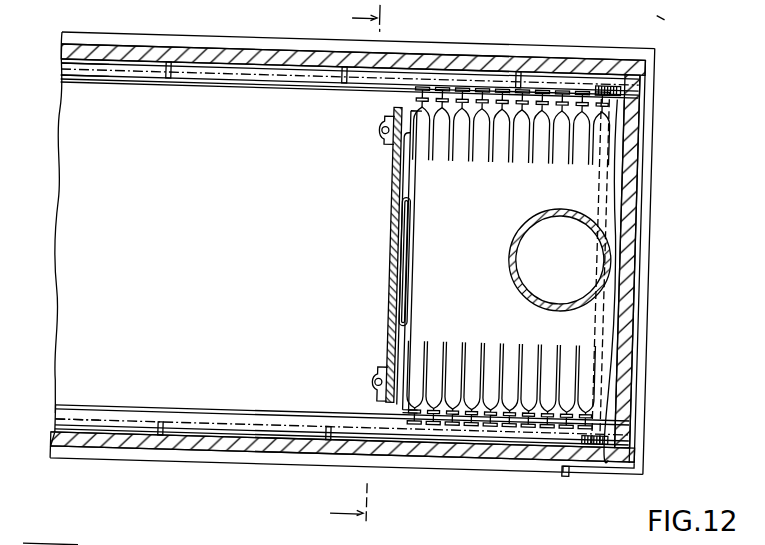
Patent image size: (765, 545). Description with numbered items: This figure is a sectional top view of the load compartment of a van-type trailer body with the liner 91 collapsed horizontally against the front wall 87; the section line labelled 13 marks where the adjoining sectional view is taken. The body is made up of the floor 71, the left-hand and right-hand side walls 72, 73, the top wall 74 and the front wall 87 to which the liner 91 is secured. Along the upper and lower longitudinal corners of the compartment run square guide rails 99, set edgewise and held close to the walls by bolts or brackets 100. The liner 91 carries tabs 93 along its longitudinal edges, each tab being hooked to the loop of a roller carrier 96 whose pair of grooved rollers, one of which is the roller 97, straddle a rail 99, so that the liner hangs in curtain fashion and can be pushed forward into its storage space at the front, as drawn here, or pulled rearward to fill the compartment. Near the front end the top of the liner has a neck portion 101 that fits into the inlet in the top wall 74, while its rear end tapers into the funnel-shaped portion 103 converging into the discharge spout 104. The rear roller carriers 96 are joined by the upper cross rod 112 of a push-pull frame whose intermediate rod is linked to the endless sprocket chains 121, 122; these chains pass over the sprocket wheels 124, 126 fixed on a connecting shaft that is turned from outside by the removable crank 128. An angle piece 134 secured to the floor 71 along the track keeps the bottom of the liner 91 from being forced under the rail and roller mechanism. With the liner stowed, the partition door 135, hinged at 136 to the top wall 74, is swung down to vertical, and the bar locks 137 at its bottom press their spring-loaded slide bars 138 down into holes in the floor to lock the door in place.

The floor 71 is at (293, 44).
The side wall 72 is at (533, 49).
The side wall 73 is at (509, 453).
The top wall 74 is at (224, 541).
The front wall 87 is at (641, 116).
The liner 91 is at (590, 140).
The tab 93 is at (576, 396).
The roller carrier 96 is at (484, 96).
The grooved roller 97 is at (570, 76).
The guide rail 99 is at (234, 80).
The bracket 100 is at (169, 59).
The neck portion 101 is at (608, 248).
The funnel-shaped portion 103 is at (411, 334).
The discharge spout 104 is at (413, 223).
The upper cross rod 112 is at (454, 368).
The endless sprocket chain 121 is at (73, 68).
The endless sprocket chain 122 is at (64, 423).
The sprocket wheel 124 is at (624, 66).
The sprocket wheel 126 is at (621, 427).
The crank 128 is at (577, 464).
The angle piece 134 is at (392, 108).
The door 135 is at (403, 309).
The hinge 136 is at (94, 542).
The bar lock 137 is at (393, 384).
The slide bar 138 is at (387, 374).
The section line 13 is at (344, 265).